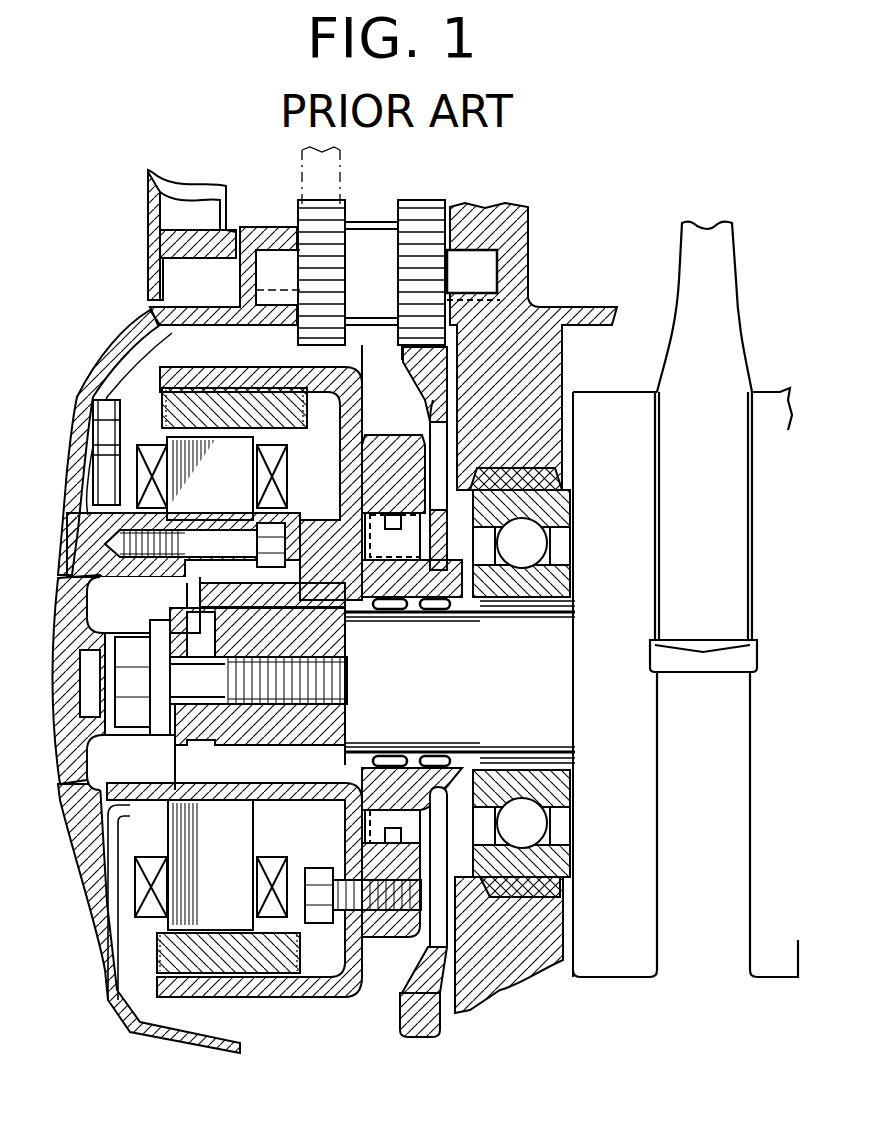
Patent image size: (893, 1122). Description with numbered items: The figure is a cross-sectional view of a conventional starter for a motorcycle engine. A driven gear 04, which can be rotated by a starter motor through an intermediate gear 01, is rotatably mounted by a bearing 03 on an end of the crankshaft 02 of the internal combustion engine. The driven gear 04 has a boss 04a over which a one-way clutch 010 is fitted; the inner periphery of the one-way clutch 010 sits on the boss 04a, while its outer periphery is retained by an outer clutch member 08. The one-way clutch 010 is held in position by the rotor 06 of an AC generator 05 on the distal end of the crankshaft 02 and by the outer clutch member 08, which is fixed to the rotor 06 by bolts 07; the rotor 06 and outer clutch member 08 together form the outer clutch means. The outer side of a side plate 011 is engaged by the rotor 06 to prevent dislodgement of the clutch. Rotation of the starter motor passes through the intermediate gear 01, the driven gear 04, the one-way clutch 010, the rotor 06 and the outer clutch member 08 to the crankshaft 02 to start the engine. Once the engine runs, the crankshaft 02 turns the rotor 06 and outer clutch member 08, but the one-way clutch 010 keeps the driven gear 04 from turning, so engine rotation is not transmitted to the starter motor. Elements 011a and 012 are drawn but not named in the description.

The intermediate gear 01 is at (424, 200).
The crankshaft 02 is at (472, 707).
The bearing 03 is at (392, 605).
The driven gear 04 is at (443, 407).
The boss 04a is at (437, 590).
The AC generator 05 is at (148, 414).
The rotor 06 is at (332, 364).
The bolts 07 is at (338, 875).
The outer clutch member 08 is at (385, 442).
The one-way clutch 010 is at (385, 545).
The side plate 011 is at (340, 815).
The coil yoke 011a is at (335, 840).
The clutch member (lower) 012 is at (430, 762).